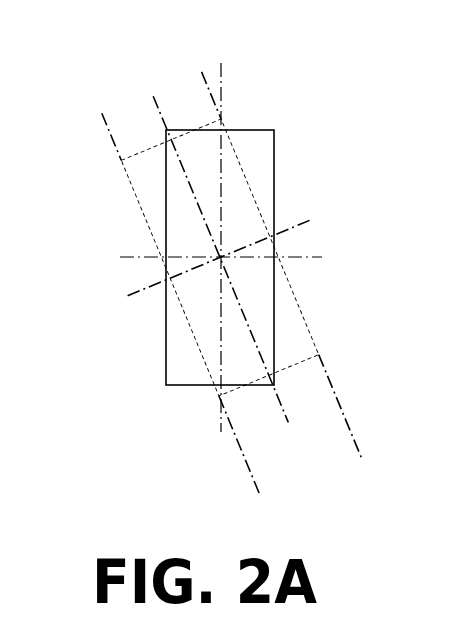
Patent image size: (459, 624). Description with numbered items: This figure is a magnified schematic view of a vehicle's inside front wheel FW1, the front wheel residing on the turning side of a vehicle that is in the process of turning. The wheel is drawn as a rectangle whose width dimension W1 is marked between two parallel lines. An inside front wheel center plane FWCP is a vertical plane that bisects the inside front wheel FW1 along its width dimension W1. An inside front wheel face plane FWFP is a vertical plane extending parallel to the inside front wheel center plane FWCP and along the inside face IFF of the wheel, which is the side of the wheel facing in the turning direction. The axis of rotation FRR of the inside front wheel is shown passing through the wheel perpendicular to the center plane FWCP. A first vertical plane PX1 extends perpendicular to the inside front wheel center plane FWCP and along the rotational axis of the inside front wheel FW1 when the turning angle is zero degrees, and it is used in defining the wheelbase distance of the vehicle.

The inside front wheel FW1 is at (287, 149).
The inside face IFF is at (147, 220).
The inside front wheel center plane FWCP is at (221, 71).
The inside front wheel face plane FWFP is at (106, 128).
The axis of rotation FRR is at (290, 256).
The first vertical plane PX1 is at (311, 259).
The width dimension W1 is at (320, 482).